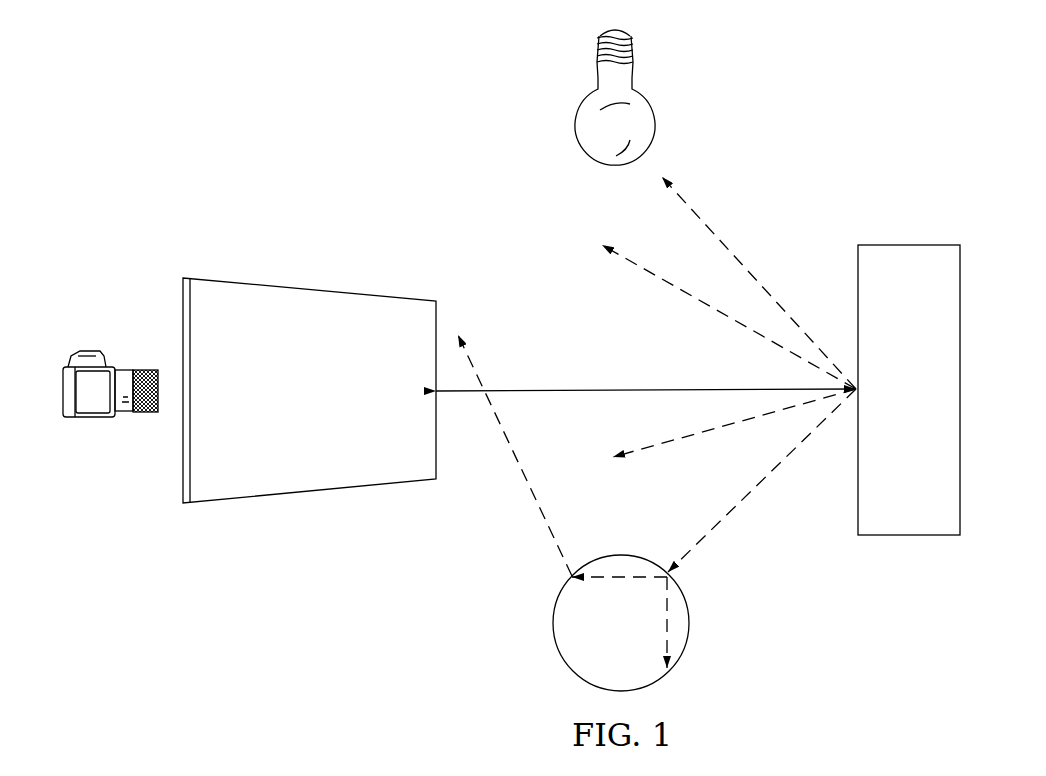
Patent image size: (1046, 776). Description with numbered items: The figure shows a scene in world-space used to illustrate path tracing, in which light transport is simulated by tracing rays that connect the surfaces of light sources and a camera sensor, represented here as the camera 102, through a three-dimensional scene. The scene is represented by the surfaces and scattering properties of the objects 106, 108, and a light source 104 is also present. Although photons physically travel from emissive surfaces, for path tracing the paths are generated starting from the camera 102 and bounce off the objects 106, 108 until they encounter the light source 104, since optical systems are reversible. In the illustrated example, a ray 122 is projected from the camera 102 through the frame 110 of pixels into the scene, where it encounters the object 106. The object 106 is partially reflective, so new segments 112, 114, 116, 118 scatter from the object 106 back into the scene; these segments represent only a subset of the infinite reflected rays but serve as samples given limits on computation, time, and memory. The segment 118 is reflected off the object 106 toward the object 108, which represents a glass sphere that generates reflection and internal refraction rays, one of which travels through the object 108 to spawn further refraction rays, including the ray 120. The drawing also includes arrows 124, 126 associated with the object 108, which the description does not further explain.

The camera 102 is at (88, 352).
The light source 104 is at (634, 53).
The object 106 is at (892, 405).
The object 108 is at (683, 655).
The frame 110 is at (312, 288).
The segment 112 is at (763, 284).
The segment 114 is at (735, 321).
The segment 116 is at (690, 436).
The segment 118 is at (760, 484).
The ray 120 is at (533, 494).
The ray 122 is at (567, 392).
The horizontal distance arrow 124 is at (609, 580).
The vertical distance arrow 126 is at (672, 606).